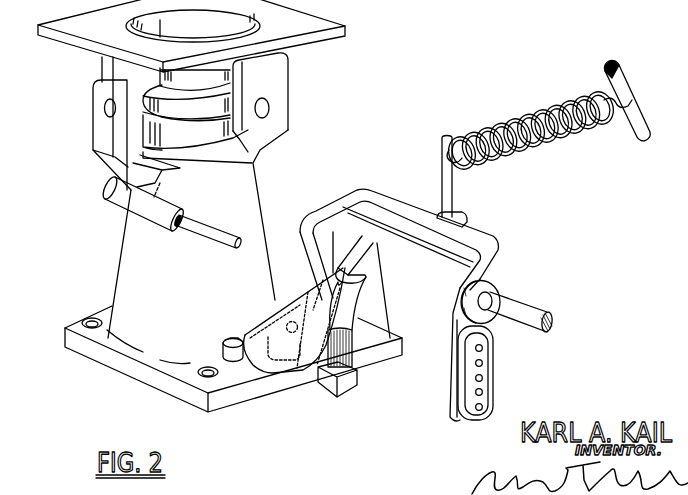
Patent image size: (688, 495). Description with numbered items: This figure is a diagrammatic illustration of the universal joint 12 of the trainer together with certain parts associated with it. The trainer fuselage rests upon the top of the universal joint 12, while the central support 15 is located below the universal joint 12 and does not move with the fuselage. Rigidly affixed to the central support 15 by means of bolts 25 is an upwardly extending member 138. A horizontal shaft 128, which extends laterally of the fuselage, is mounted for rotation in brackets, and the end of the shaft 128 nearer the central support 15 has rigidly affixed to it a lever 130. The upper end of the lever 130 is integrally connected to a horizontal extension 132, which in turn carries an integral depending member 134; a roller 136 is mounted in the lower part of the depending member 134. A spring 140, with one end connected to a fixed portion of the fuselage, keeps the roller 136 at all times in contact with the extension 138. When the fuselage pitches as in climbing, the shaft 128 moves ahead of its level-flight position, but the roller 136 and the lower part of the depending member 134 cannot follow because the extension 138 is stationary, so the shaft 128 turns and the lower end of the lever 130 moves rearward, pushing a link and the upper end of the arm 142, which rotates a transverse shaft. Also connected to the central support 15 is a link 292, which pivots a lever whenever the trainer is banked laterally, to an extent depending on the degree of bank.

The universal joint 12 is at (297, 72).
The central support 15 is at (137, 243).
The link 292 is at (180, 228).
The bolts 25 is at (240, 365).
The horizontal shaft 128 is at (530, 317).
The lever 130 is at (487, 370).
The horizontal extension 132 is at (412, 252).
The depending member 134 is at (380, 323).
The roller 136 is at (337, 360).
The upwardly extending member 138 is at (318, 352).
The spring 140 is at (538, 110).
The arm 142 is at (622, 75).